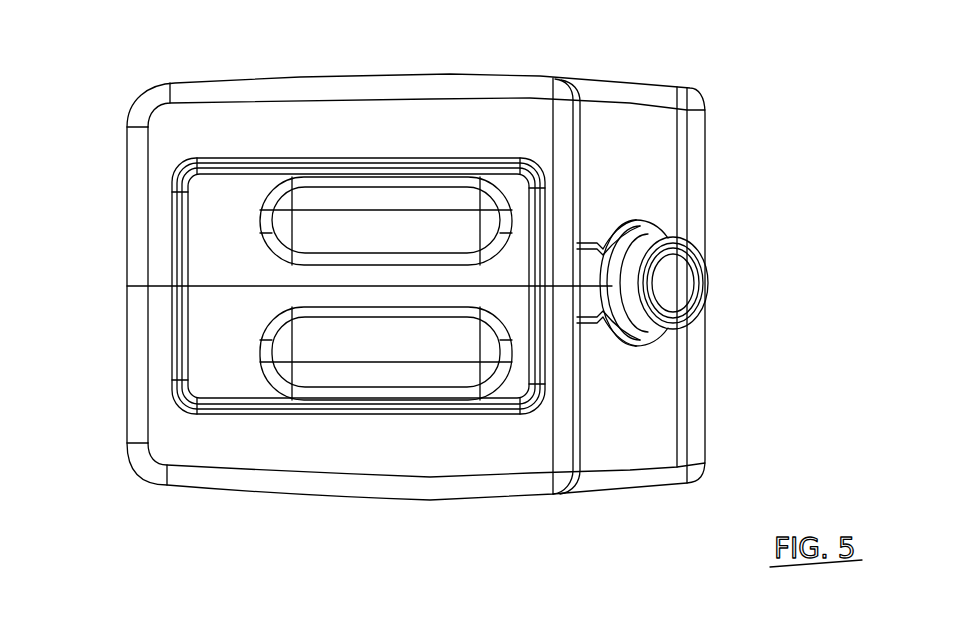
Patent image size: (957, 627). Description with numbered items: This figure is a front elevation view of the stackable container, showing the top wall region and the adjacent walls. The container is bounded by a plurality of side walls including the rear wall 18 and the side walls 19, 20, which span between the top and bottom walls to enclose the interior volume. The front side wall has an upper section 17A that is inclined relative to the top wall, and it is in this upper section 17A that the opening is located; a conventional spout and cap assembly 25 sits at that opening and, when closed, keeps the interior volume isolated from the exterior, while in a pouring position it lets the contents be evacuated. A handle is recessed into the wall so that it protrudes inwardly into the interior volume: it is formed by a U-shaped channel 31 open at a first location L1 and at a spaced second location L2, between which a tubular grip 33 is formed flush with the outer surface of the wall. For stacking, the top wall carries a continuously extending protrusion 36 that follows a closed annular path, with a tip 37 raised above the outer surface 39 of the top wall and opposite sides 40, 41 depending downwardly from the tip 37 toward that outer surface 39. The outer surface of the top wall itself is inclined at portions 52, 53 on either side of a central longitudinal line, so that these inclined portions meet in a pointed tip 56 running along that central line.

The side wall 20 is at (352, 75).
The rear wall 18 is at (125, 350).
The side wall 19 is at (445, 500).
The outer surface of the top wall 39 is at (447, 95).
The upper section of the front side wall 17A is at (660, 190).
The inclined portion of the top wall outer surface 53 is at (398, 128).
The inclined portion of the top wall outer surface 52 is at (498, 455).
The tip of the top wall 56 is at (153, 286).
The tip of the protrusion 37 is at (240, 170).
The side of the protrusion 40 is at (268, 170).
The side of the protrusion 41 is at (217, 178).
The protrusion 36 is at (224, 412).
The second location L2 is at (252, 231).
The U-shaped channel 31 is at (390, 373).
The first location L1 is at (252, 354).
The tubular grip 33 is at (330, 298).
The spout and cap assembly 25 is at (700, 247).